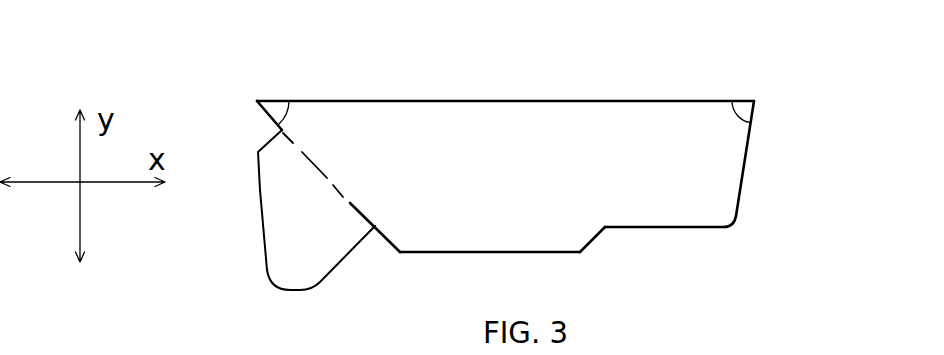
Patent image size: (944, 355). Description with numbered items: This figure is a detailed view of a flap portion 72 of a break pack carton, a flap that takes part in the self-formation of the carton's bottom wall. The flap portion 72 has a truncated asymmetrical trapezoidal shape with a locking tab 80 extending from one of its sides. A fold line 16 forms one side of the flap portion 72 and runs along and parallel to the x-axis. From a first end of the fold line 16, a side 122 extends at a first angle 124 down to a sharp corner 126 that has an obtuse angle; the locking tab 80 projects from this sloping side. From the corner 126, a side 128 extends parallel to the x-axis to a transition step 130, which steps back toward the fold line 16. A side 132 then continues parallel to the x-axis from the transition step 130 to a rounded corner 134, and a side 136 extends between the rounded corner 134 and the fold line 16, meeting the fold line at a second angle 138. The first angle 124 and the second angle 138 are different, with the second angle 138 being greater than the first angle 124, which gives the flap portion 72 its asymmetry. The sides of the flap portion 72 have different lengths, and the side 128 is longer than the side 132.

The fold line 16 is at (510, 101).
The flap portion 72 is at (522, 182).
The locking tab 80 is at (235, 264).
The side 122 is at (260, 109).
The first angle 124 is at (292, 112).
The sharp corner 126 is at (415, 246).
The side 128 is at (487, 252).
The transition step 130 is at (601, 263).
The side 132 is at (695, 227).
The rounded corner 134 is at (756, 239).
The side 136 is at (748, 157).
The second angle 138 is at (737, 115).